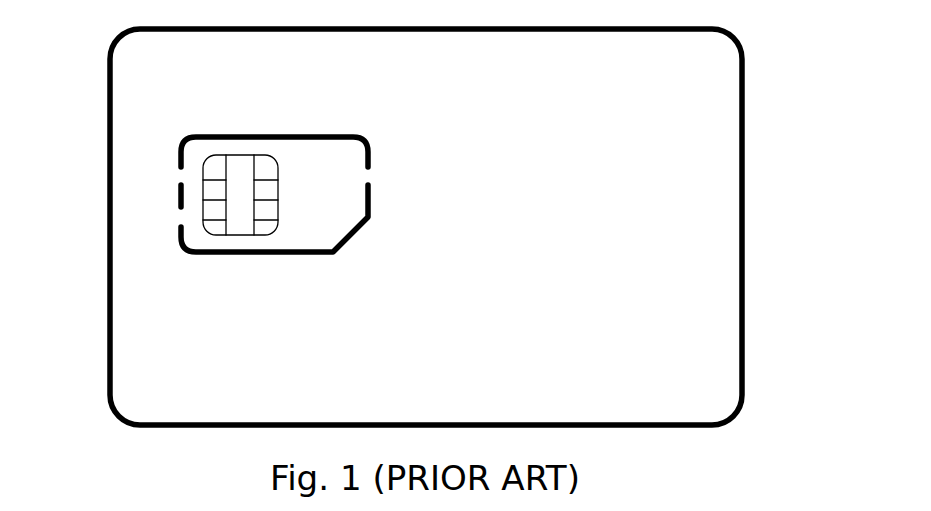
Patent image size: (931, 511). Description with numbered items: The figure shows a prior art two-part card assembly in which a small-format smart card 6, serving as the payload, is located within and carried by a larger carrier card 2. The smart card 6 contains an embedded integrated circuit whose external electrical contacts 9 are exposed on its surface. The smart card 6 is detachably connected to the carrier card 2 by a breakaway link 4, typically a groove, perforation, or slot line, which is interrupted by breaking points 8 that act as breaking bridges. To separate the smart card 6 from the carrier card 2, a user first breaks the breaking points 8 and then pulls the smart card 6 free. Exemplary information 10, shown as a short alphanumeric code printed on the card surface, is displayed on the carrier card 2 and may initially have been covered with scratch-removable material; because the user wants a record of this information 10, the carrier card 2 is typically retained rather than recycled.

The ID-1 carrier card 2 is at (682, 200).
The breakaway link 4 is at (367, 140).
The ID-000 card 6 is at (283, 206).
The breaking points 8 is at (178, 176).
The external electrical contacts 9 is at (238, 213).
The information 10 is at (547, 313).